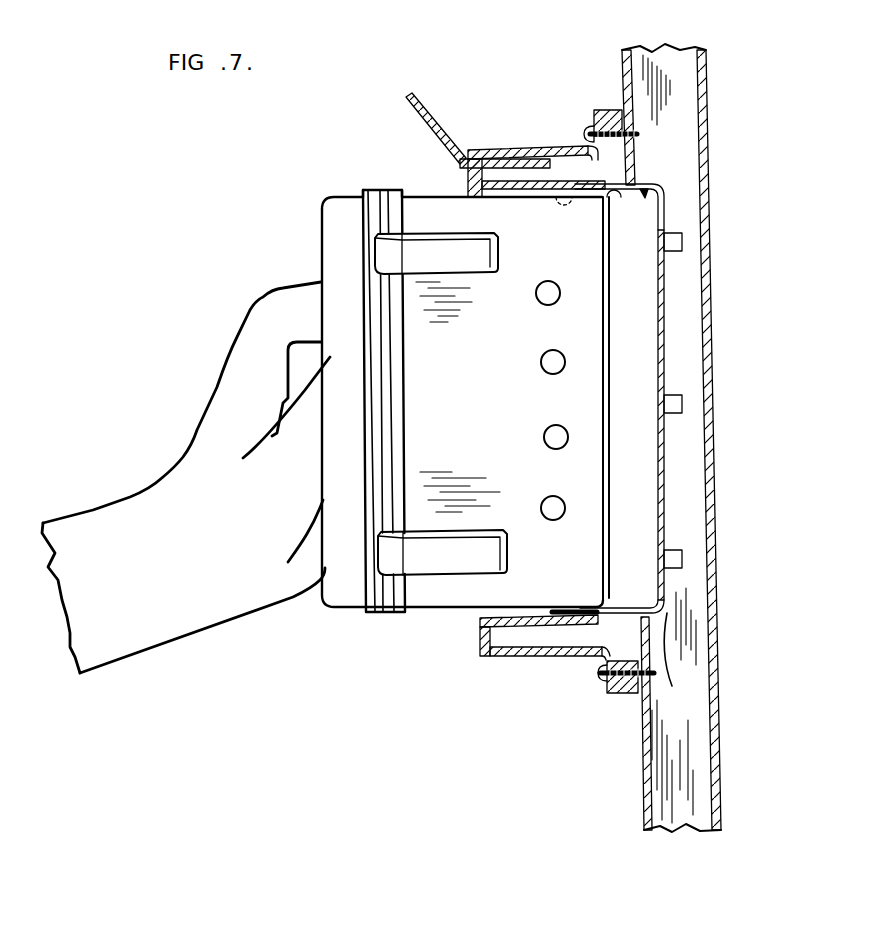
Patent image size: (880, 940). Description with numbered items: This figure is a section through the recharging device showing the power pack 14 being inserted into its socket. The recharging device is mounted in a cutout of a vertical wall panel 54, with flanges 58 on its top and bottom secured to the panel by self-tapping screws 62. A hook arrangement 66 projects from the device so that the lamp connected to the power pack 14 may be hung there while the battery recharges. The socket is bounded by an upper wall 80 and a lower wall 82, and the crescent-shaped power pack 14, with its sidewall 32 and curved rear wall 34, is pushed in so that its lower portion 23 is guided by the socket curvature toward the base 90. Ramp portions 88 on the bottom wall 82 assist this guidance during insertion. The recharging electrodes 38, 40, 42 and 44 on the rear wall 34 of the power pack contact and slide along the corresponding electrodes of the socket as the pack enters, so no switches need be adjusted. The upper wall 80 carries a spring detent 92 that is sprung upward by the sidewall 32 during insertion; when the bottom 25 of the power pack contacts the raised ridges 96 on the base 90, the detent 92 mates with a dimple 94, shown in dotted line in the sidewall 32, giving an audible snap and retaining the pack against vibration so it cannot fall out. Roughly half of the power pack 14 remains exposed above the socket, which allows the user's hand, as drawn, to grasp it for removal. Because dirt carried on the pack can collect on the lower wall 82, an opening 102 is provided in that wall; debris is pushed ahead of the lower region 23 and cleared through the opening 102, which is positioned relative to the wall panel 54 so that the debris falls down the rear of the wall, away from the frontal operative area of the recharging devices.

The power pack 14 is at (357, 177).
The lower portion of the power pack 23 is at (519, 230).
The bottom of the power pack 25 is at (604, 346).
The sidewall 32 is at (422, 192).
The rear wall 34 is at (448, 450).
The recharging electrode 38 is at (536, 300).
The recharging electrode 40 is at (541, 362).
The recharging electrode 42 is at (565, 425).
The recharging electrode 44 is at (562, 497).
The wall panel 54 is at (690, 797).
The flange 58 is at (610, 108).
The self-tapping screw 62 is at (622, 692).
The hook arrangement 66 is at (423, 96).
The top wall 80 is at (650, 175).
The bottom wall 82 is at (478, 620).
The ramp portion 88 is at (535, 614).
The base of the socket 90 is at (672, 395).
The spring detent 92 is at (583, 152).
The dimple 94 is at (568, 205).
The raised ridge 96 is at (660, 268).
The opening 102 is at (665, 625).